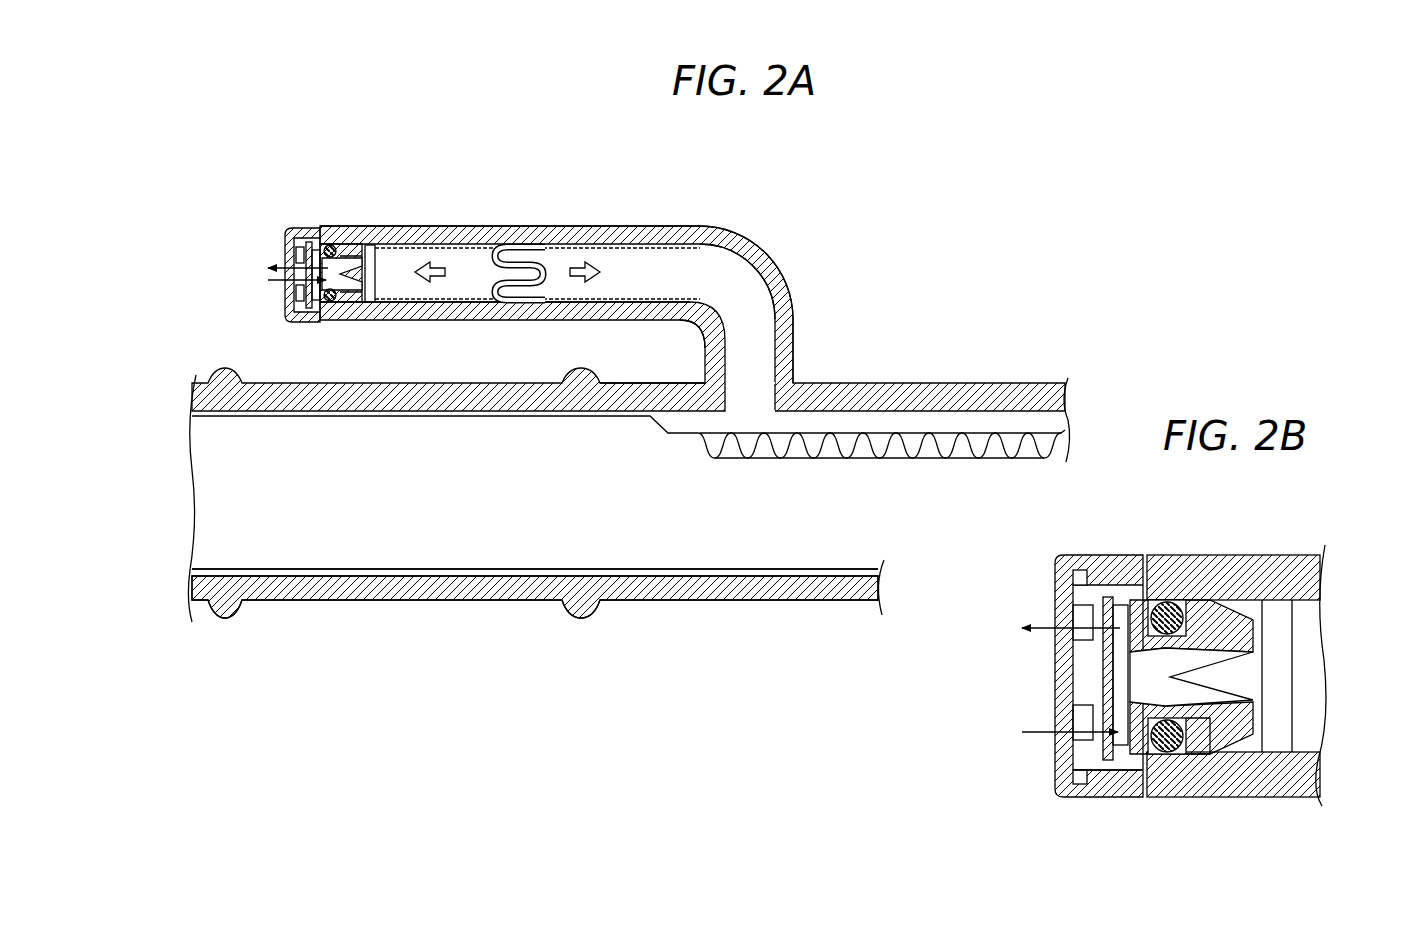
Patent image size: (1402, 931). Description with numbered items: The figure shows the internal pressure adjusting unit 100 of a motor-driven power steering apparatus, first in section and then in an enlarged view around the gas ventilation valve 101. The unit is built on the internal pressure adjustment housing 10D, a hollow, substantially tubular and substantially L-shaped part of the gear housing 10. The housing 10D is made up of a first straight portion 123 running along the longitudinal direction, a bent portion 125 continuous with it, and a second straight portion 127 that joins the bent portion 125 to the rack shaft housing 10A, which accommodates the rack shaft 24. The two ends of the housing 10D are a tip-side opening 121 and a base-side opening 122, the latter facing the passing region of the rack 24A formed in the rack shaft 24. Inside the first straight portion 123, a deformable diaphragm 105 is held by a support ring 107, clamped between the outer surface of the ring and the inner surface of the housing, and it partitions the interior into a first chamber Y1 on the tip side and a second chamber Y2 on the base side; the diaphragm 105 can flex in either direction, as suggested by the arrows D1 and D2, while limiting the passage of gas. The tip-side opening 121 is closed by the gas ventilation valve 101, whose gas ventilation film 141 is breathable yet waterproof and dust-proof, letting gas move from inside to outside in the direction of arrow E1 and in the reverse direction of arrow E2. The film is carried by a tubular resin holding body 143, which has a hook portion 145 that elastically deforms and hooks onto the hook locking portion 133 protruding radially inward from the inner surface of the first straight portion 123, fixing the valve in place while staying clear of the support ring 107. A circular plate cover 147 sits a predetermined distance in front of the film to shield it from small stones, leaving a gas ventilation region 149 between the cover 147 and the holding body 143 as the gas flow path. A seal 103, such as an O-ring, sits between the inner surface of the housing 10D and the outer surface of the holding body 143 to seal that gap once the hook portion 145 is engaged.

In FIG. 2A, the gear housing 10 is at (352, 667).
In FIG. 2A, the rack shaft housing 10A is at (436, 602).
In FIG. 2A, the internal pressure adjustment housing 10D is at (628, 222).
In FIG. 2A, the rack shaft 24 is at (964, 430).
In FIG. 2A, the rack 24A is at (899, 434).
In FIG. 2A, the internal pressure adjusting unit 100 is at (803, 240).
In FIG. 2A, the gas ventilation valve 101 is at (288, 232).
In FIG. 2B, the gas ventilation valve 101 is at (1048, 586).
In FIG. 2A, the seal 103 is at (327, 246).
In FIG. 2B, the seal 103 is at (1170, 738).
In FIG. 2A, the diaphragm 105 is at (545, 245).
In FIG. 2A, the support ring 107 is at (369, 245).
In FIG. 2B, the support ring 107 is at (1276, 615).
In FIG. 2A, the tip-side opening 121 is at (320, 298).
In FIG. 2B, the tip-side opening 121 is at (1152, 690).
In FIG. 2A, the base-side opening 122 is at (742, 410).
In FIG. 2A, the first straight portion 123 is at (448, 320).
In FIG. 2B, the first straight portion 123 is at (1170, 553).
In FIG. 2A, the bent portion 125 is at (704, 334).
In FIG. 2A, the second straight portion 127 is at (704, 372).
In FIG. 2A, the hook locking portion 133 is at (345, 302).
In FIG. 2B, the hook locking portion 133 is at (1215, 612).
In FIG. 2B, the gas ventilation film 141 is at (1118, 652).
In FIG. 2B, the holding body 143 is at (1105, 798).
In FIG. 2B, the hook portion 145 is at (1225, 742).
In FIG. 2B, the cover 147 is at (1062, 683).
In FIG. 2B, the gas ventilation region 149 is at (1080, 720).
In FIG. 2A, the first chamber Y1 is at (452, 262).
In FIG. 2A, the second chamber Y2 is at (582, 250).
In FIG. 2A, the direction D1 is at (417, 272).
In FIG. 2A, the direction D2 is at (604, 272).
In FIG. 2A, the arrow E1 is at (291, 254).
In FIG. 2B, the arrow E1 is at (1070, 613).
In FIG. 2A, the arrow E2 is at (290, 294).
In FIG. 2B, the arrow E2 is at (1069, 747).